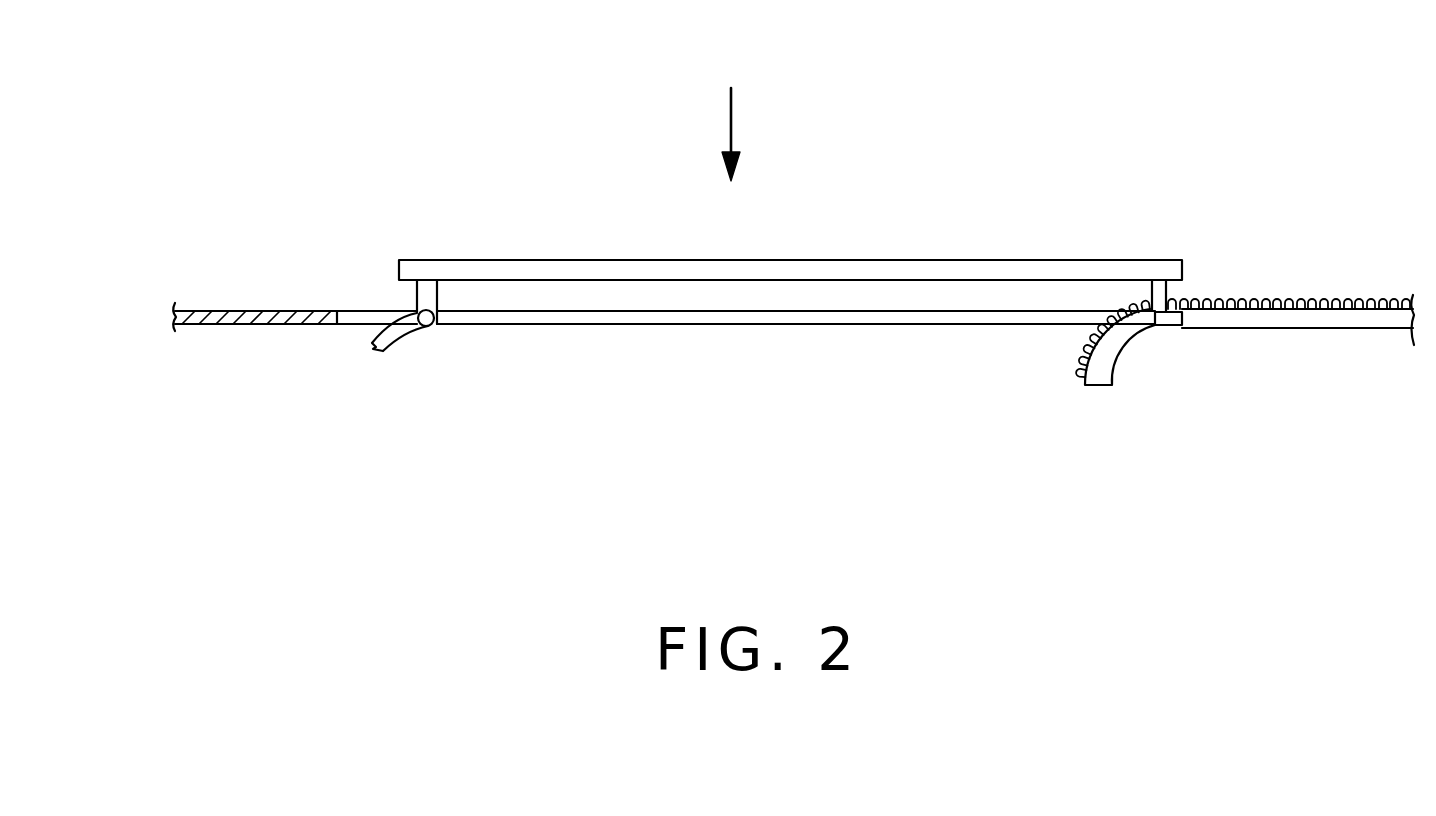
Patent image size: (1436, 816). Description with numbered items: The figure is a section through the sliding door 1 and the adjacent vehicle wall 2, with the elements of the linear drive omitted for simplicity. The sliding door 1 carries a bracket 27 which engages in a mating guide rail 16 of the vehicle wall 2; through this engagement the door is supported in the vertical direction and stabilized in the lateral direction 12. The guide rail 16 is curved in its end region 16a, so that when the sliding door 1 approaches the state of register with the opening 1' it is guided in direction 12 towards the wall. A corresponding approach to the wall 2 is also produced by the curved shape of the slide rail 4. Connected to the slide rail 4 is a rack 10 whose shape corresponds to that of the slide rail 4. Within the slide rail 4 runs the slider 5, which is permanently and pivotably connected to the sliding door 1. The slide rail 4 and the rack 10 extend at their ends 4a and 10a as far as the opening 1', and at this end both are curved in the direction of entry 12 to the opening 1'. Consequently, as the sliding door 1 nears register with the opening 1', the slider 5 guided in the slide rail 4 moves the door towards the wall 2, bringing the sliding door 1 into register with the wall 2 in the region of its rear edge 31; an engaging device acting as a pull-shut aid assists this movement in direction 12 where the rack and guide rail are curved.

The sliding door 1 is at (790, 217).
The opening 1' is at (796, 390).
The vehicle wall 2 is at (227, 310).
The slide rail 4 is at (1327, 328).
The end of the slide rail 4a is at (1107, 378).
The slider 5 is at (1170, 315).
The rack 10 is at (1332, 300).
The end of the rack 10a is at (1083, 373).
The lateral direction 12 is at (733, 112).
The guide rail 16 is at (517, 324).
The end region of the guide rail 16a is at (380, 355).
The bracket 27 is at (420, 297).
The rear edge 31 is at (1187, 268).